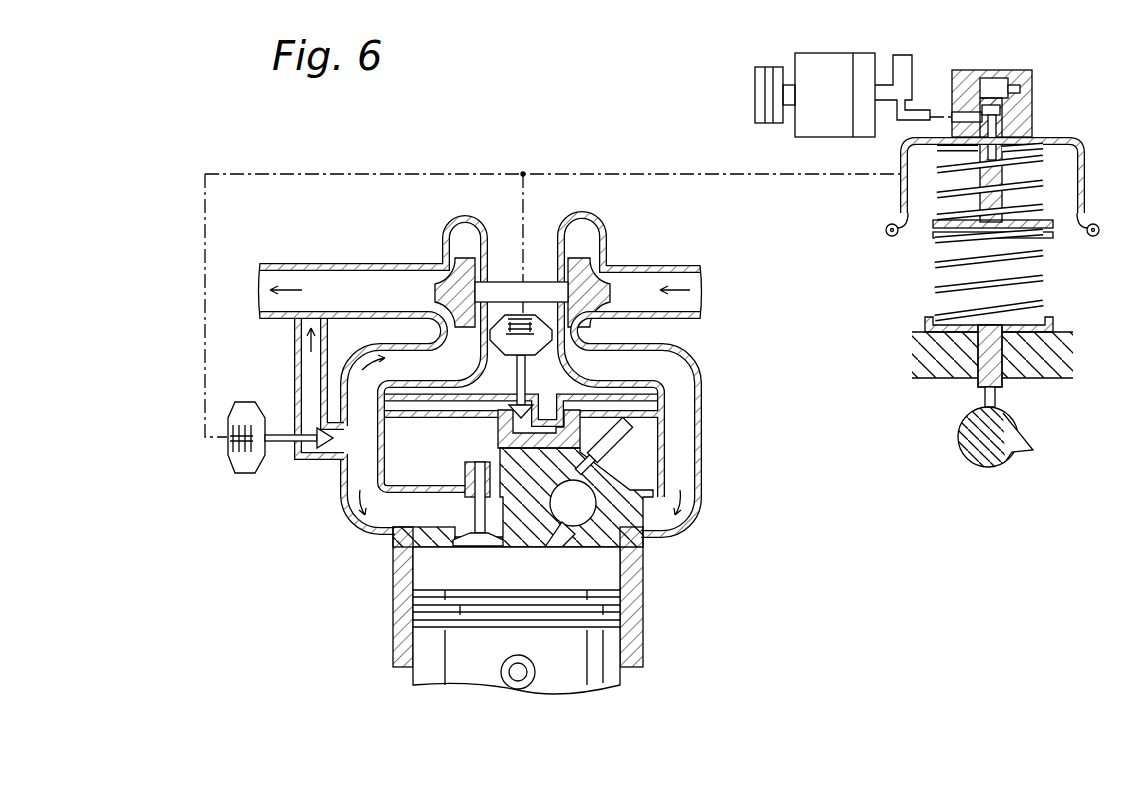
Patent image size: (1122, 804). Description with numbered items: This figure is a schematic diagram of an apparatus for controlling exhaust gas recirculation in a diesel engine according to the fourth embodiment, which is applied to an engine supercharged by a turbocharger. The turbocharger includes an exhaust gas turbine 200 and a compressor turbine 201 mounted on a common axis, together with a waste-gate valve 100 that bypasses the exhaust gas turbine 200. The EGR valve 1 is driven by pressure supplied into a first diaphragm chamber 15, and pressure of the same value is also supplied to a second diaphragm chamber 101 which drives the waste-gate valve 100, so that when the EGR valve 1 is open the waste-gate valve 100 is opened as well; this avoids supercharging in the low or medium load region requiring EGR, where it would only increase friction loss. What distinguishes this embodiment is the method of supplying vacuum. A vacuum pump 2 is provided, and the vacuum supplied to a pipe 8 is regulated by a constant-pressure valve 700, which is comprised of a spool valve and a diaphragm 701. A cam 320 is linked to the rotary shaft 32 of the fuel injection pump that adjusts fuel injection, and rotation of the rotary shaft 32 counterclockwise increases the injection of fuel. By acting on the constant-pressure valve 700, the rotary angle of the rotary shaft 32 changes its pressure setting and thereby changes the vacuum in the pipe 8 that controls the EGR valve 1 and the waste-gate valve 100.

The EGR valve 1 is at (530, 318).
The vacuum pump 2 is at (905, 55).
The pipe 8 is at (793, 177).
The first diaphragm chamber 15 is at (505, 318).
The rotary shaft 32 is at (1008, 437).
The waste-gate valve 100 is at (228, 456).
The second diaphragm chamber 101 is at (240, 470).
The exhaust gas turbine 200 is at (455, 288).
The compressor turbine 201 is at (598, 276).
The cam 320 is at (1036, 450).
The constant-pressure valve 700 is at (1032, 74).
The diaphragm 701 is at (1058, 232).